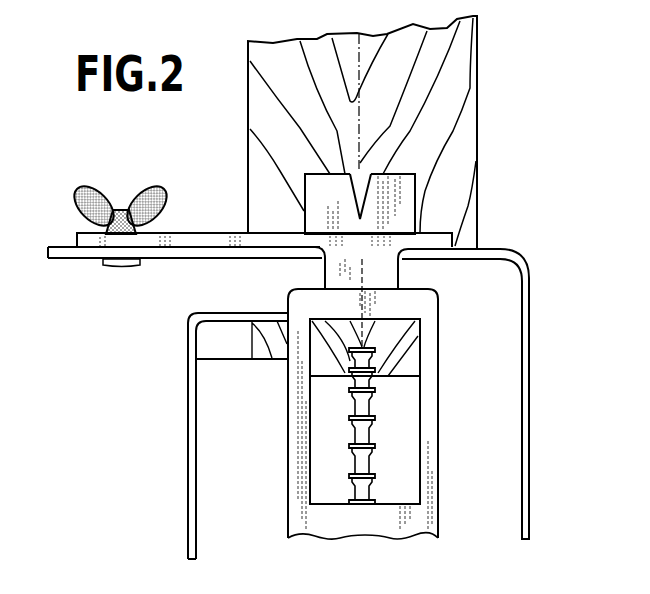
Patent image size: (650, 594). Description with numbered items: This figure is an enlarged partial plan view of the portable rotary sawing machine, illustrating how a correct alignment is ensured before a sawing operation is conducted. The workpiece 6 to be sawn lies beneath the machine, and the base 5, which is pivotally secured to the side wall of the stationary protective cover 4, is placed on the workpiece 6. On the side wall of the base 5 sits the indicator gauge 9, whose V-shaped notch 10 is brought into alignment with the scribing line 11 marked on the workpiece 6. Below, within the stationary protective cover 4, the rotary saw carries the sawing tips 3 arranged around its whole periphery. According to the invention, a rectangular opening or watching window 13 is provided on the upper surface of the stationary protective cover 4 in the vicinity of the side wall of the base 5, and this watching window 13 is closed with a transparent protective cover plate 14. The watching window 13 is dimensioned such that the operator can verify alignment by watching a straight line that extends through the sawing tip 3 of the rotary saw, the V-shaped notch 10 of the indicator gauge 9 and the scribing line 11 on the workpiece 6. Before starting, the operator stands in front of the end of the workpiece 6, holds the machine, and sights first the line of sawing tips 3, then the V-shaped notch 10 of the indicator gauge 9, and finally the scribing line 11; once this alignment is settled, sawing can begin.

The sawing tips 3 is at (365, 397).
The stationary protective cover 4 is at (438, 453).
The base 5 is at (275, 242).
The workpiece 6 is at (445, 95).
The indicator gauge 9 is at (403, 206).
The V-shaped notch 10 is at (355, 203).
The scribing line 11 is at (362, 162).
The rectangular opening or watching window 13 is at (413, 487).
The transparent protective cover plate 14 is at (398, 414).